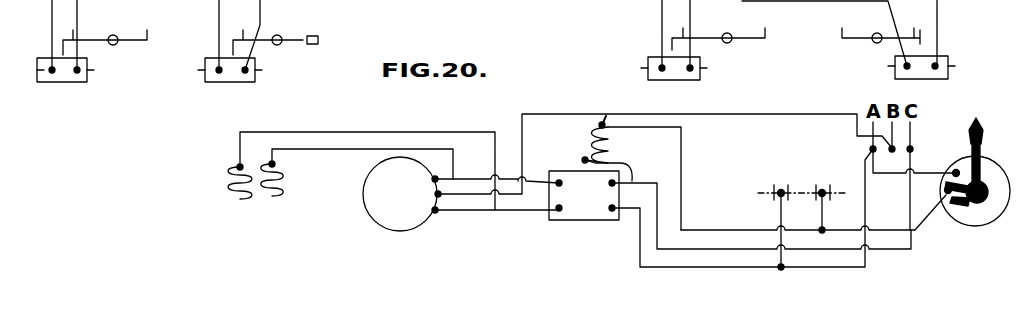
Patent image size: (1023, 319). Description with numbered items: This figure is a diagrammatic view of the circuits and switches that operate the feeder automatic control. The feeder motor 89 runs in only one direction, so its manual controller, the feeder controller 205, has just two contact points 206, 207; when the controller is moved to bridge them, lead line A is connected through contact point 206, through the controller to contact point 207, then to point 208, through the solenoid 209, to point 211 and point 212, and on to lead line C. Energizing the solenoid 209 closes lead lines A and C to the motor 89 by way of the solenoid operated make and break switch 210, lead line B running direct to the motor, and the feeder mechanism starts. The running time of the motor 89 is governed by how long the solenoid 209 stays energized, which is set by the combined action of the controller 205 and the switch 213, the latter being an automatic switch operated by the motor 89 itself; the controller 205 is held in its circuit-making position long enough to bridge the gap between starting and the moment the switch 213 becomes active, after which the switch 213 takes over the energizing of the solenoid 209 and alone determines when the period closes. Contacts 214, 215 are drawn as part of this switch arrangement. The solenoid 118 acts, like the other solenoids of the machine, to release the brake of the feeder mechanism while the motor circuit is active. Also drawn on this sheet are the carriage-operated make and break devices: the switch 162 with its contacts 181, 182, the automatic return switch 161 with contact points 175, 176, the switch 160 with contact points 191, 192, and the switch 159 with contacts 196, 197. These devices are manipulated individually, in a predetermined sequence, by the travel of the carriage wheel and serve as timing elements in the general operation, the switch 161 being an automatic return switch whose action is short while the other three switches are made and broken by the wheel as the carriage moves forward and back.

The contact of switch 162 182 is at (22, 72).
The contact of switch 162 181 is at (105, 72).
The make and break switch 162 is at (92, 54).
The contact point of switch 161 175 is at (184, 72).
The contact point of switch 161 176 is at (276, 72).
The automatic return switch 161 is at (261, 54).
The contact point of switch 160 191 is at (628, 70).
The contact point of switch 160 192 is at (722, 70).
The make and break switch 160 is at (706, 52).
The contact of switch 159 197 is at (871, 70).
The contact of switch 159 196 is at (970, 70).
The make and break switch 159 is at (845, 52).
The solenoid 118 is at (361, 177).
The feeder motor 89 is at (402, 194).
The point 208 is at (603, 111).
The solenoid 209 is at (633, 178).
The solenoid operated make and break switch 210 is at (584, 195).
The point 211 is at (585, 160).
The point 212 is at (632, 181).
The automatic switch 213 is at (801, 181).
The switch contact 214 is at (829, 196).
The switch contact 215 is at (773, 196).
The feeder manual controller 205 is at (988, 221).
The contact point of controller 205 206 is at (956, 172).
The contact point of controller 205 207 is at (947, 194).